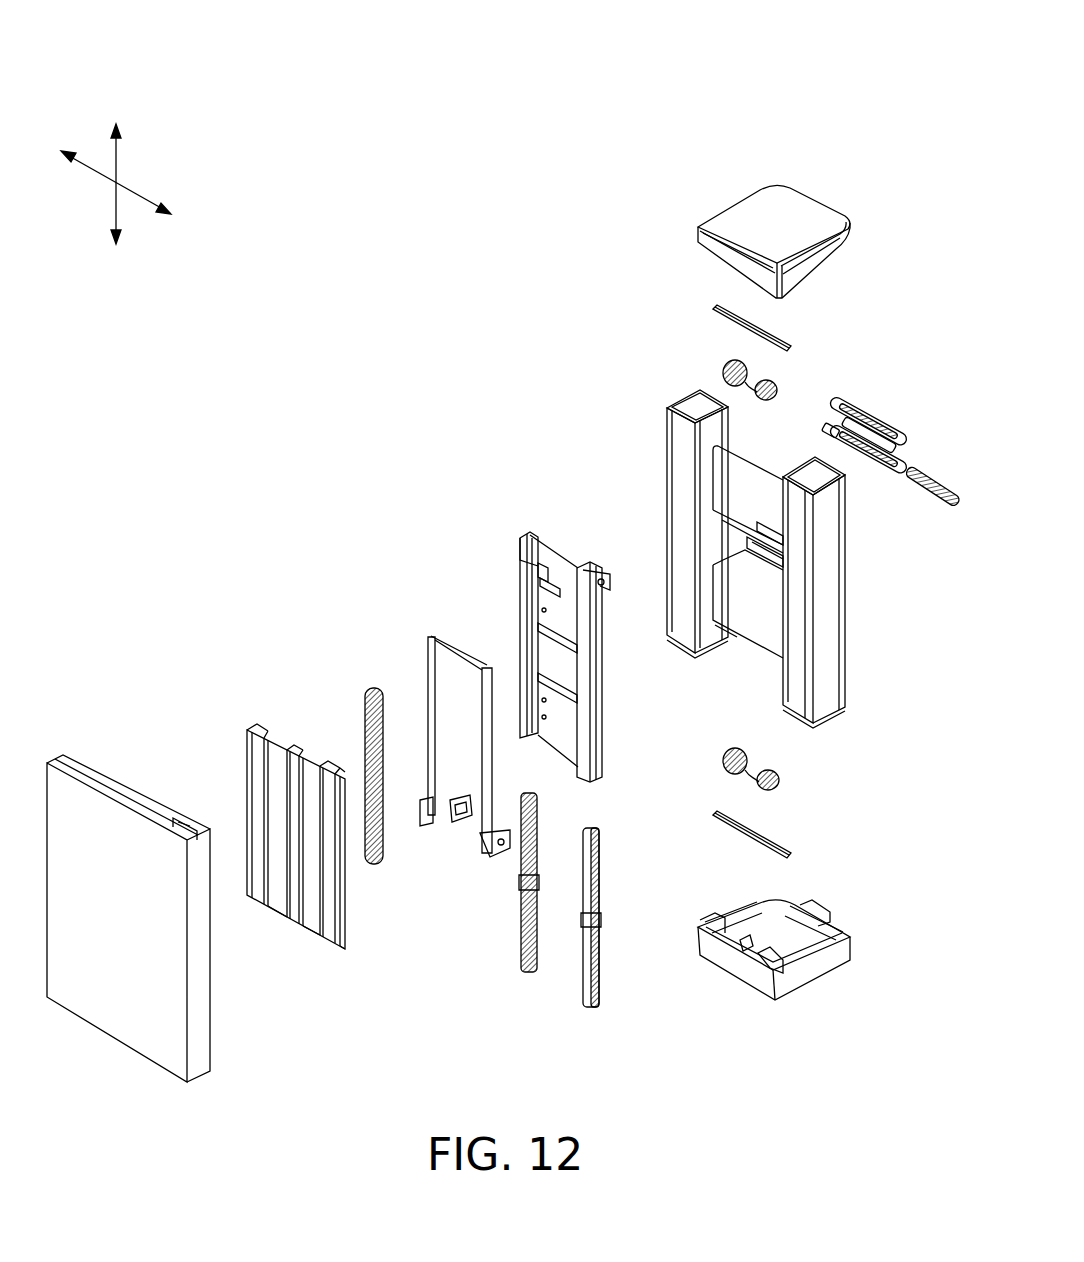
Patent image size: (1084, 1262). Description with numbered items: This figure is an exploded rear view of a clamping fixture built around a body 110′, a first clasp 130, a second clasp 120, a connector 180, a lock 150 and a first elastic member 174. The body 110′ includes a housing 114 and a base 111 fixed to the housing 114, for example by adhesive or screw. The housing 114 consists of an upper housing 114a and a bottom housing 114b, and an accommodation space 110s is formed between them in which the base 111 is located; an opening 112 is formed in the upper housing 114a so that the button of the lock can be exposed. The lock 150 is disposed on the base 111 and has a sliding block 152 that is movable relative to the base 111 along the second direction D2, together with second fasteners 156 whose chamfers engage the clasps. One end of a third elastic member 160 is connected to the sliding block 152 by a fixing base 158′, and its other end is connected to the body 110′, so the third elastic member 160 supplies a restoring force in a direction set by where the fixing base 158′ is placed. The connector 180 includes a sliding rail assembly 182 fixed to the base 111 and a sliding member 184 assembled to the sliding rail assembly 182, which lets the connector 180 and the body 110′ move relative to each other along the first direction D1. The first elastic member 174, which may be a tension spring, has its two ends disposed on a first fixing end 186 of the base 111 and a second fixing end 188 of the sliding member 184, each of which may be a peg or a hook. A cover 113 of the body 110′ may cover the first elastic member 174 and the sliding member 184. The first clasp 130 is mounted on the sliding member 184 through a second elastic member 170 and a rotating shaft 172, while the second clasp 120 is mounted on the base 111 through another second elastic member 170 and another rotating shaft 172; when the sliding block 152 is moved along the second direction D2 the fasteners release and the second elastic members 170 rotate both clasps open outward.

The first direction D1 is at (113, 171).
The second direction D2 is at (136, 197).
The body 110′ is at (445, 448).
The accommodation space 110s is at (748, 652).
The base 111 is at (560, 563).
The opening 112 is at (779, 560).
The cover 113 is at (262, 745).
The housing 114 is at (395, 392).
The upper housing 114a is at (668, 497).
The bottom housing 114b is at (94, 808).
The second clasp 120 is at (800, 205).
The first clasp 130 is at (800, 980).
The lock 150 is at (890, 415).
The sliding block 152 is at (900, 440).
The second fastener 156 is at (863, 413).
The fixing base 158′ is at (823, 427).
The third elastic member 160 is at (927, 475).
The second elastic member 170 is at (773, 387).
The rotating shaft 172 is at (777, 340).
The first elastic member 174 is at (366, 700).
The connector 180 is at (386, 958).
The sliding rail assembly 182 is at (526, 934).
The sliding member 184 is at (443, 825).
The first fixing end 186 is at (520, 573).
The second fixing end 188 is at (460, 827).